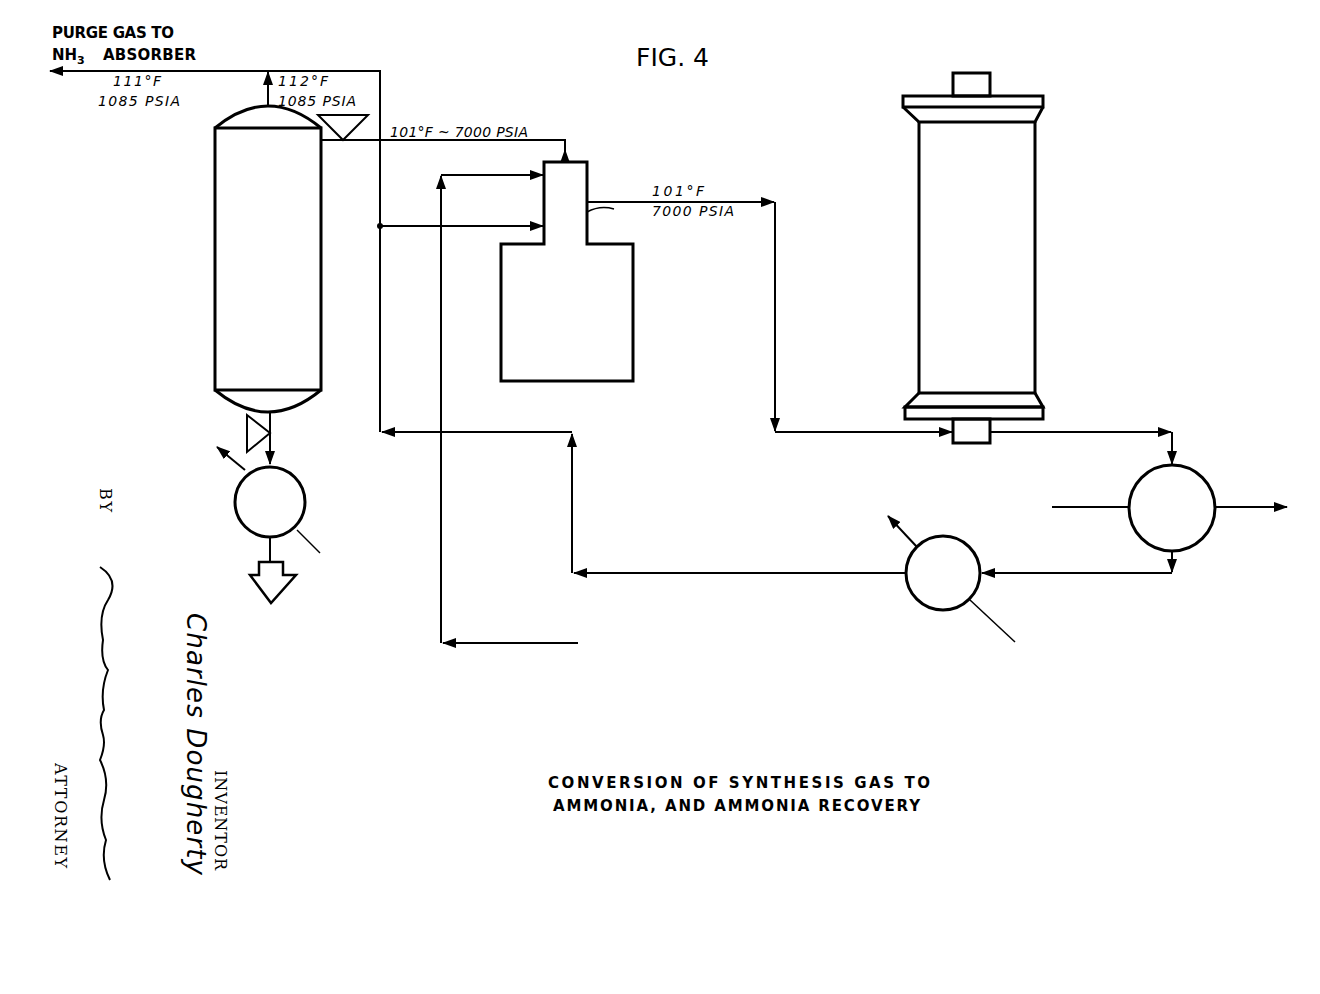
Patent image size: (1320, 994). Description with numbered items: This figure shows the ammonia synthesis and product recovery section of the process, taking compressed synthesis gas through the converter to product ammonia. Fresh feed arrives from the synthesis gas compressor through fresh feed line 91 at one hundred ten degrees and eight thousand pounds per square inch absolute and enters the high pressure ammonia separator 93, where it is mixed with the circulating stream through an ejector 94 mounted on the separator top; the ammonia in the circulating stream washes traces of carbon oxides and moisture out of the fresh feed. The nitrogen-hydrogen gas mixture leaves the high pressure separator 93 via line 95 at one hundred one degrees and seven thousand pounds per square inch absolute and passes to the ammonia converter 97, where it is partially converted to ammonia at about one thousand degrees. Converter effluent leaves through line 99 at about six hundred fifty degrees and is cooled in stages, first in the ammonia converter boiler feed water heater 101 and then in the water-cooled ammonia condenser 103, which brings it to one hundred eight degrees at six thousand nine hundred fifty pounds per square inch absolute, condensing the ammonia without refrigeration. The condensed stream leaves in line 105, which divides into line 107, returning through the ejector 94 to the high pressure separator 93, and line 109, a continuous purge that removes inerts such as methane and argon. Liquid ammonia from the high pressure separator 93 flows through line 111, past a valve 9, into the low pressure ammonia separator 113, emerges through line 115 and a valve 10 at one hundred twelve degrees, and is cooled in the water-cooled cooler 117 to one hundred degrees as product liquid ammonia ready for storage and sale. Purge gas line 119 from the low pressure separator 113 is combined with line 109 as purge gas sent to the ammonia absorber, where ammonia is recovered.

The purge gas let-down valve 9 is at (441, 139).
The product ammonia let-down valve 10 is at (258, 433).
The fresh feed line 91 is at (504, 173).
The high pressure ammonia separator 93 is at (633, 318).
The ejector 94 is at (608, 220).
The line 95 is at (636, 201).
The ammonia converter 97 is at (919, 300).
The line 99 is at (1097, 431).
The ammonia converter boiler feed water heater 101 is at (1200, 475).
The ammonia condenser 103 is at (970, 550).
The line 105 is at (380, 315).
The line 107 is at (520, 224).
The line 109 is at (380, 213).
The line 111 is at (552, 140).
The low pressure ammonia separator 113 is at (215, 276).
The line 115 is at (273, 425).
The cooler 117 is at (235, 502).
The line 119 is at (266, 97).